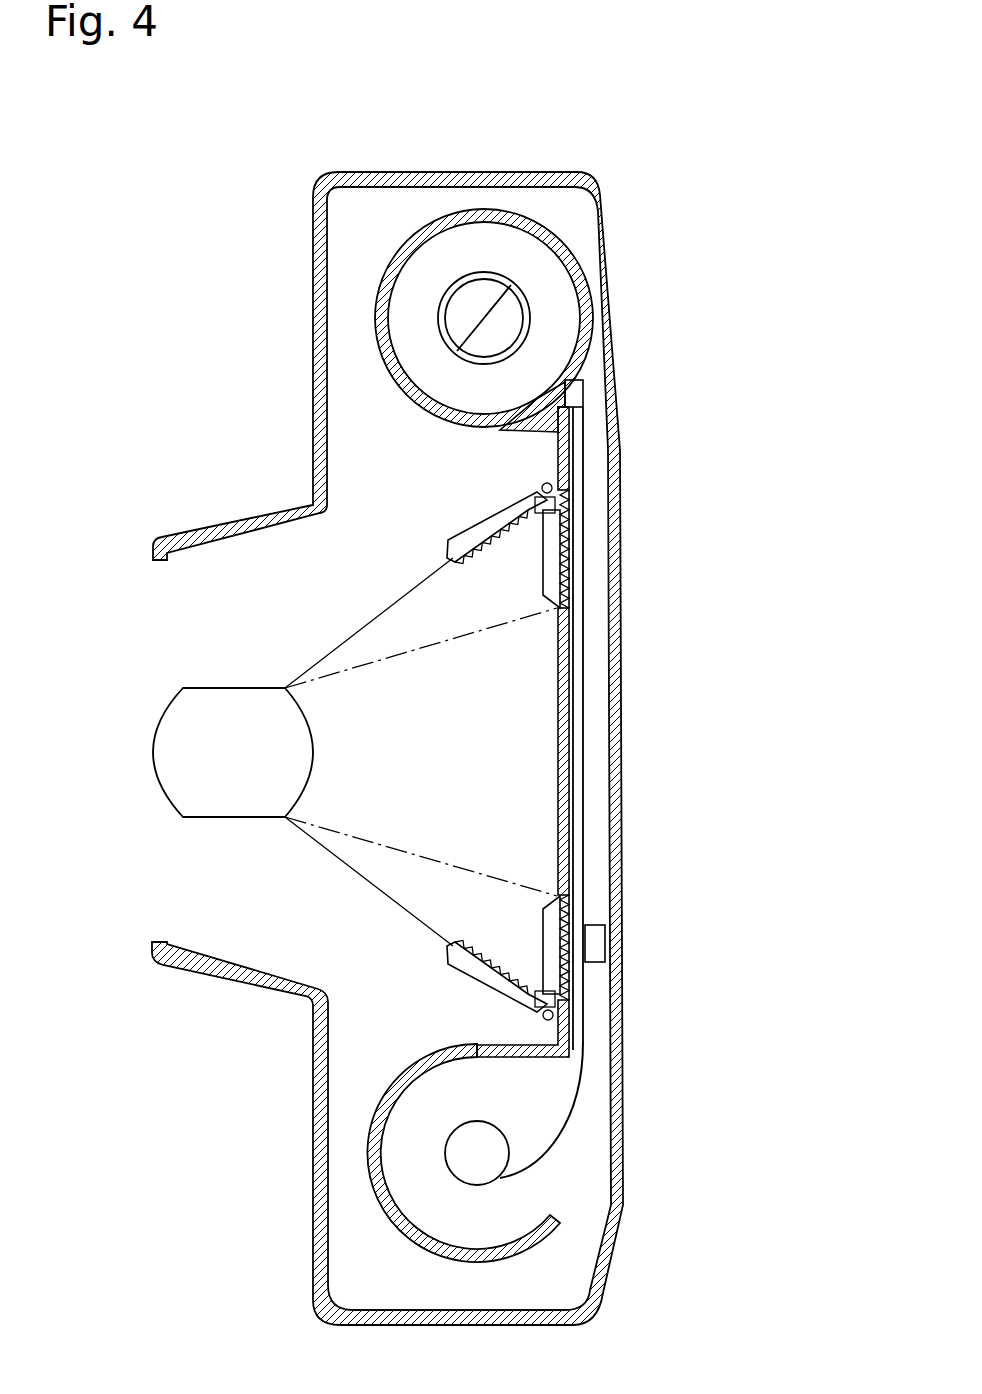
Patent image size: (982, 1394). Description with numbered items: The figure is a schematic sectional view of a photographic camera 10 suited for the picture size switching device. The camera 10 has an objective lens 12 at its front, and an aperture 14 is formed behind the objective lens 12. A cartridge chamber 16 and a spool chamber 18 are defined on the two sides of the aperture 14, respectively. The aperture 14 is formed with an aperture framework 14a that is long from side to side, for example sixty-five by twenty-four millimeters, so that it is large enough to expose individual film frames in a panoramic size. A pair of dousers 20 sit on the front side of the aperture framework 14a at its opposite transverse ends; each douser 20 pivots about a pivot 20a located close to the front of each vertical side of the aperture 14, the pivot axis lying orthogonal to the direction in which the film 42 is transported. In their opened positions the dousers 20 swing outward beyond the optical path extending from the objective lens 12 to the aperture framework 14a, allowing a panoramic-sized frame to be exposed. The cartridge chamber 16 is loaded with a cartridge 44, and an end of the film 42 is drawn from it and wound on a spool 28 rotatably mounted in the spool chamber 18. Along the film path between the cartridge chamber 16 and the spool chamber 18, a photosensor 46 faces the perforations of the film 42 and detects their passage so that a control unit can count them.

The photographic camera 10 is at (163, 316).
The objective lens 12 is at (178, 752).
The aperture 14 is at (570, 765).
The aperture framework 14a is at (568, 992).
The cartridge chamber 16 is at (537, 225).
The spool chamber 18 is at (495, 1222).
The dousers 20 is at (553, 570).
The pivot 20a is at (568, 440).
The spool 28 is at (487, 1163).
The film 42 is at (563, 1120).
The cartridge 44 is at (465, 237).
The photosensor 46 is at (600, 946).